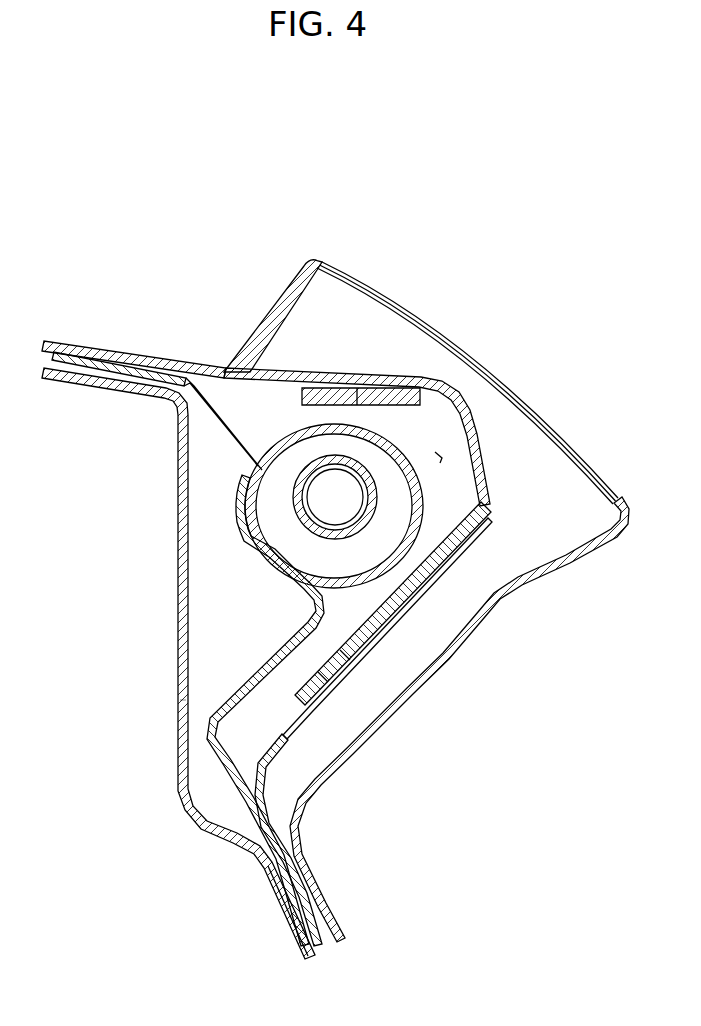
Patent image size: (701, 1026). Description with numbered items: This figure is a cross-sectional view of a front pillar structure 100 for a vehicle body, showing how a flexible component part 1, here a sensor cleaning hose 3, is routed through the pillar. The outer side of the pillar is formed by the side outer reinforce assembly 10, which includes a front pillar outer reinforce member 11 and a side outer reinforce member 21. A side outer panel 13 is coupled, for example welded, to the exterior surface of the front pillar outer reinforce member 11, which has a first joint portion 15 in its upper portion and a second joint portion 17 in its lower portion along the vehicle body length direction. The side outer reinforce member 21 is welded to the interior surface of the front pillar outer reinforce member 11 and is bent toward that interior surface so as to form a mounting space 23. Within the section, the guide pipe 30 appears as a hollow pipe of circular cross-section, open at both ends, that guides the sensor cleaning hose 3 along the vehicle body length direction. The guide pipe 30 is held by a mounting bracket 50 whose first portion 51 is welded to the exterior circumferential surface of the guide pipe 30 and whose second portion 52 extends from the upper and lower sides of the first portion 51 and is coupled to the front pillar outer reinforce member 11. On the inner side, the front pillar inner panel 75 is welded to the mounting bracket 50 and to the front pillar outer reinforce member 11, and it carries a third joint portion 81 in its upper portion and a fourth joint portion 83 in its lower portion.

The front pillar structure 100 is at (335, 159).
The side outer reinforce assembly 10 is at (564, 307).
The front pillar outer reinforce member 11 is at (262, 368).
The side outer panel 13 is at (450, 340).
The first joint portion 15 is at (83, 352).
The second joint portion 17 is at (322, 903).
The side outer reinforce member 21 is at (454, 421).
The mounting space 23 is at (441, 455).
The guide pipe 30 is at (435, 520).
The mounting bracket 50 is at (236, 463).
The first portion 51 is at (262, 566).
The second portion 52 is at (88, 372).
The front pillar inner panel 75 is at (172, 765).
The third joint portion 81 is at (112, 385).
The fourth joint portion 83 is at (300, 923).
The flexible component part 1 is at (362, 543).
The sensor cleaning hose 3 is at (297, 512).